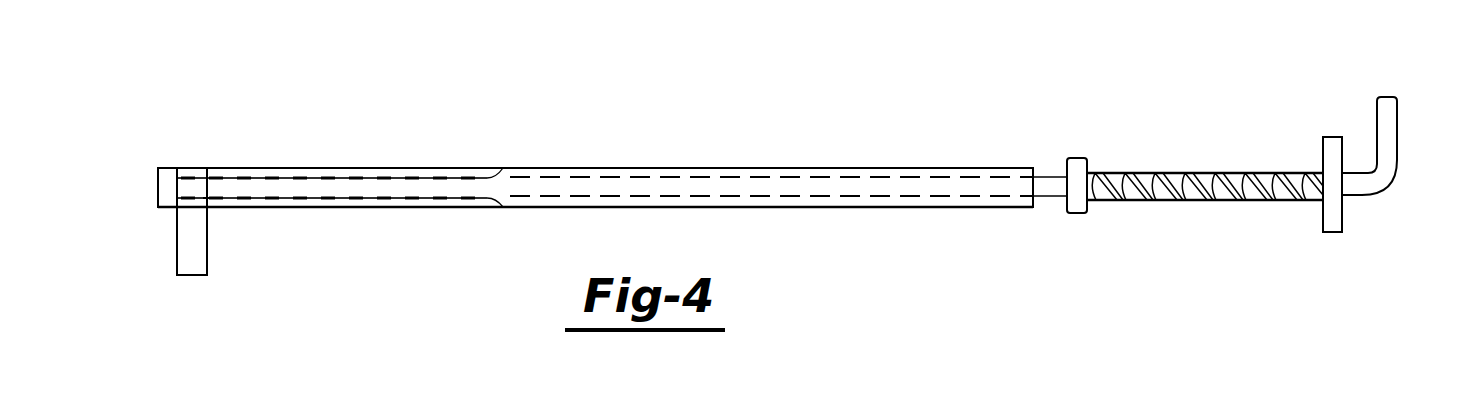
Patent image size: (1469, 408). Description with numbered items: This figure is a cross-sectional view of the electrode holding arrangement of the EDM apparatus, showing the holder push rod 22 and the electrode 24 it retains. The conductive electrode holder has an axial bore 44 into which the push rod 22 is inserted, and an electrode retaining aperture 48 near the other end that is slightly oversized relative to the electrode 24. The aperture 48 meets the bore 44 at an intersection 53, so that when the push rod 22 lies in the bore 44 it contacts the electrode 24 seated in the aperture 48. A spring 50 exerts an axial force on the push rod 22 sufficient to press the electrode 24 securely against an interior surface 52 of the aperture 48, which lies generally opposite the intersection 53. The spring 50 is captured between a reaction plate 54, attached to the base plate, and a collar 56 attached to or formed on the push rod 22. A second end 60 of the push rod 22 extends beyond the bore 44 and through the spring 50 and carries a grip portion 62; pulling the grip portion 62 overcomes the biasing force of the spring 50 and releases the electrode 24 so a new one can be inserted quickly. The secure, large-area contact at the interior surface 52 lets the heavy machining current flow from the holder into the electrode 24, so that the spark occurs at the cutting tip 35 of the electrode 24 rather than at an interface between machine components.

The holder push rod 22 is at (344, 186).
The electrode 24 is at (185, 232).
The cutting tip 35 is at (196, 268).
The axial bore 44 is at (226, 180).
The electrode retaining aperture 48 is at (205, 170).
The interior surface 52 is at (185, 170).
The intersection 53 is at (208, 200).
The spring 50 is at (1178, 148).
The reaction plate 54 is at (1333, 148).
The collar 56 is at (1080, 172).
The second end 60 is at (1348, 192).
The grip portion 62 is at (1386, 122).